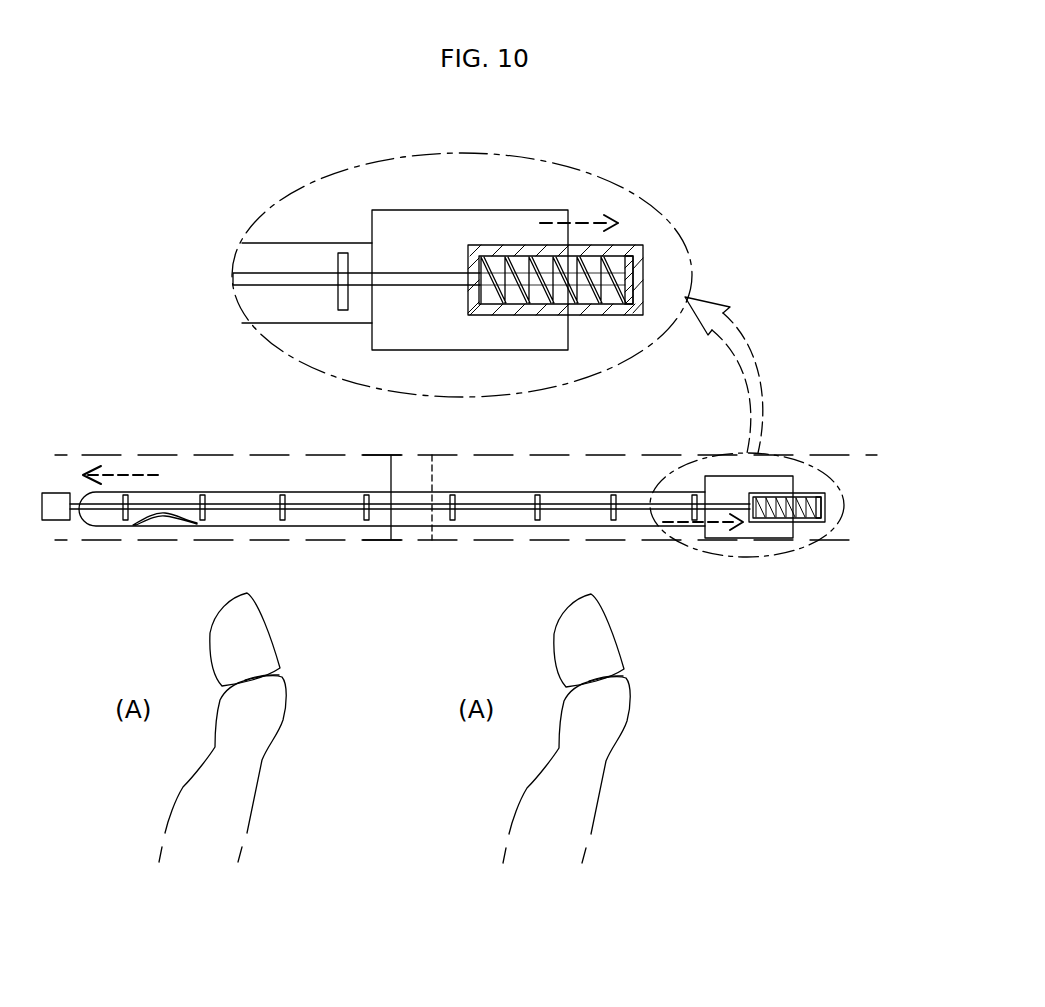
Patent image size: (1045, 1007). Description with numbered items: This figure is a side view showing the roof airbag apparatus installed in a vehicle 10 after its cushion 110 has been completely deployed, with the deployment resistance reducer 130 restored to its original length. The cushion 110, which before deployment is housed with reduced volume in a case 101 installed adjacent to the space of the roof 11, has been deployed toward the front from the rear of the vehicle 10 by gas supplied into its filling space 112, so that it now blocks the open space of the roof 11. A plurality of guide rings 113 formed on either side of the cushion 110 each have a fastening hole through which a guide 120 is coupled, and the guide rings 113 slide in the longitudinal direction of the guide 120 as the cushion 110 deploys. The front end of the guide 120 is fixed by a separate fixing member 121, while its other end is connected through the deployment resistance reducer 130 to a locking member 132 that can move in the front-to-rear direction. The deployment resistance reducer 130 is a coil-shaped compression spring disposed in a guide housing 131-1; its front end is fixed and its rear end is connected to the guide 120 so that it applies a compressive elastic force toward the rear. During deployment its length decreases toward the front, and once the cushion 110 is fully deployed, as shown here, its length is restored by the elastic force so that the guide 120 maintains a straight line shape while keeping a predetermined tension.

The vehicle 10 is at (125, 466).
The roof 11 is at (224, 475).
The case 101 is at (445, 235).
The cushion 110 is at (285, 260).
The filling space 112 is at (170, 515).
The guide rings 113 is at (341, 255).
The guide 120 is at (250, 282).
The fixing member 121 is at (53, 512).
The deployment resistance reducer 130 is at (602, 253).
The guide housing 131-1 is at (513, 247).
The locking member 132 is at (643, 253).